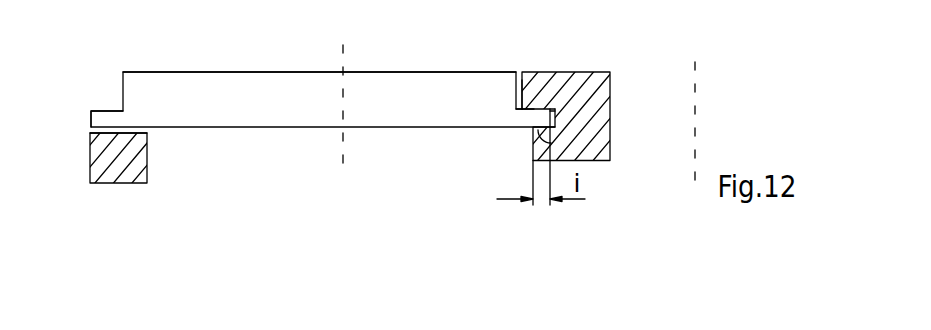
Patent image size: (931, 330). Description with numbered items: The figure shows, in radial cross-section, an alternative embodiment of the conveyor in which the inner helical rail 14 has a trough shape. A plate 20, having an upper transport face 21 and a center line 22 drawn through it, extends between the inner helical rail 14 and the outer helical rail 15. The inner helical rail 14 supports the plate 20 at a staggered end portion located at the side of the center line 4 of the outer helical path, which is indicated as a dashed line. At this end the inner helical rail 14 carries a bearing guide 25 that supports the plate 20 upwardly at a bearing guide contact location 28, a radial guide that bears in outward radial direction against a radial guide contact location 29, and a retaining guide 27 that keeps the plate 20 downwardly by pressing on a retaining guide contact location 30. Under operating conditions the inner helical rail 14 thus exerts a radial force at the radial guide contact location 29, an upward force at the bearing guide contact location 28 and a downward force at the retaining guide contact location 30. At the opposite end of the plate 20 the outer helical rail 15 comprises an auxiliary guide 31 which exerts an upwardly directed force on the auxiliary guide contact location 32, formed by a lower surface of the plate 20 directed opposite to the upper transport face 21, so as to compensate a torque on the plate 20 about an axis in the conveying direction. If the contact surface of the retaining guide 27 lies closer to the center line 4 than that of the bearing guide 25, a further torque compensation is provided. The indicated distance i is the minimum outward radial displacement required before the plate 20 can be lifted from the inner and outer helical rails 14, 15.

The center line 4 is at (697, 91).
The inner helical rail 14 is at (612, 87).
The outer helical rail 15 is at (100, 155).
The plate 20 is at (256, 121).
The upper transport face 21 is at (427, 71).
The center line of carrier plate 22 is at (339, 60).
The bearing guide 25 is at (556, 120).
The retaining guide 27 is at (534, 109).
The bearing guide contact location 28 is at (552, 131).
The radial guide contact location 29 is at (522, 100).
The retaining guide contact location 30 is at (553, 112).
The auxiliary guide 31 is at (99, 128).
The auxiliary guide contact location 32 is at (131, 132).